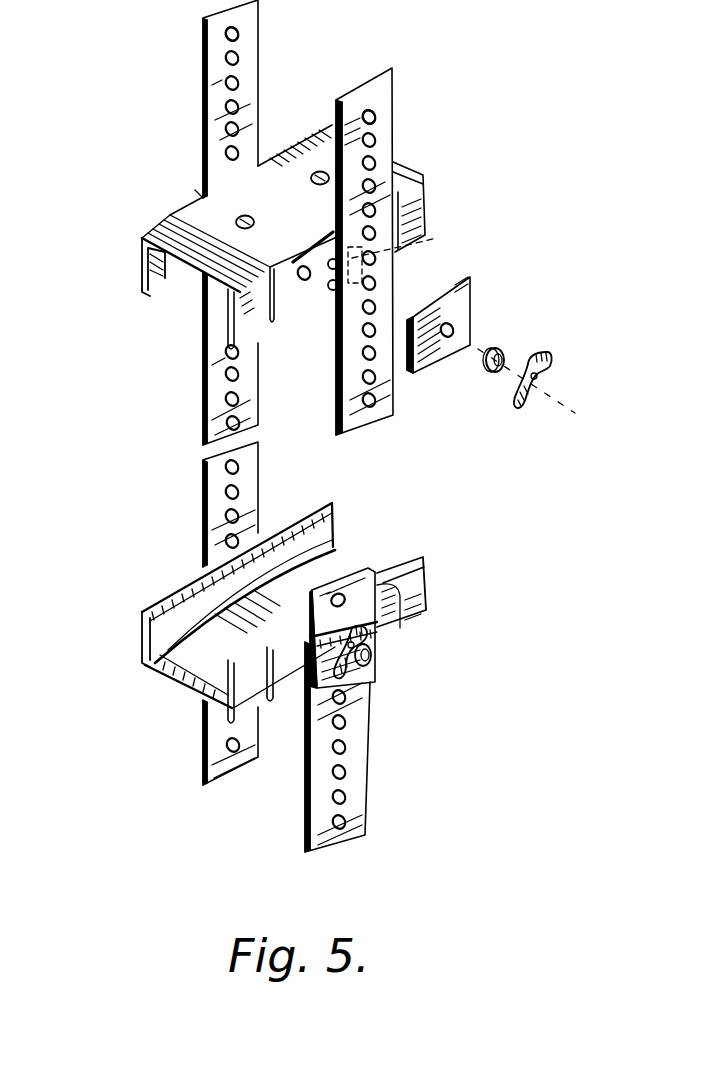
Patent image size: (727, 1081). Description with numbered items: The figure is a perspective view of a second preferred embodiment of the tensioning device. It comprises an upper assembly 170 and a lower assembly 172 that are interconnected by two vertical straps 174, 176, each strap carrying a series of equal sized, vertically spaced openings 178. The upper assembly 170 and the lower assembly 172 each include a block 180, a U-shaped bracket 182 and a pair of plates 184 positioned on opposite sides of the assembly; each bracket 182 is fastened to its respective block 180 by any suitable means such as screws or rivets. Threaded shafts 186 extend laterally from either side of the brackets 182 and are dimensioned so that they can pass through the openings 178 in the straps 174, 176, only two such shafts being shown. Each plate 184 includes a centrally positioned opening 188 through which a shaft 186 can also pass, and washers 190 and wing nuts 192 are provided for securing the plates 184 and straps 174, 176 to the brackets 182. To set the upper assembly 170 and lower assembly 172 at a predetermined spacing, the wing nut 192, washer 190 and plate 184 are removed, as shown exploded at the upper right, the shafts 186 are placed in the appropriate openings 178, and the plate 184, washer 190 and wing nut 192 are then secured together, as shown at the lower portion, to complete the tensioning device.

The upper assembly 170 is at (148, 208).
The lower assembly 172 is at (400, 640).
The strap 174 is at (213, 405).
The strap 176 is at (393, 405).
The openings 178 is at (237, 36).
The block 180 is at (142, 239).
The U-shaped bracket 182 is at (187, 203).
The plate 184 is at (197, 192).
The threaded shaft 186 is at (437, 238).
The opening 188 is at (452, 331).
The washer 190 is at (503, 350).
The wing nut 192 is at (550, 362).